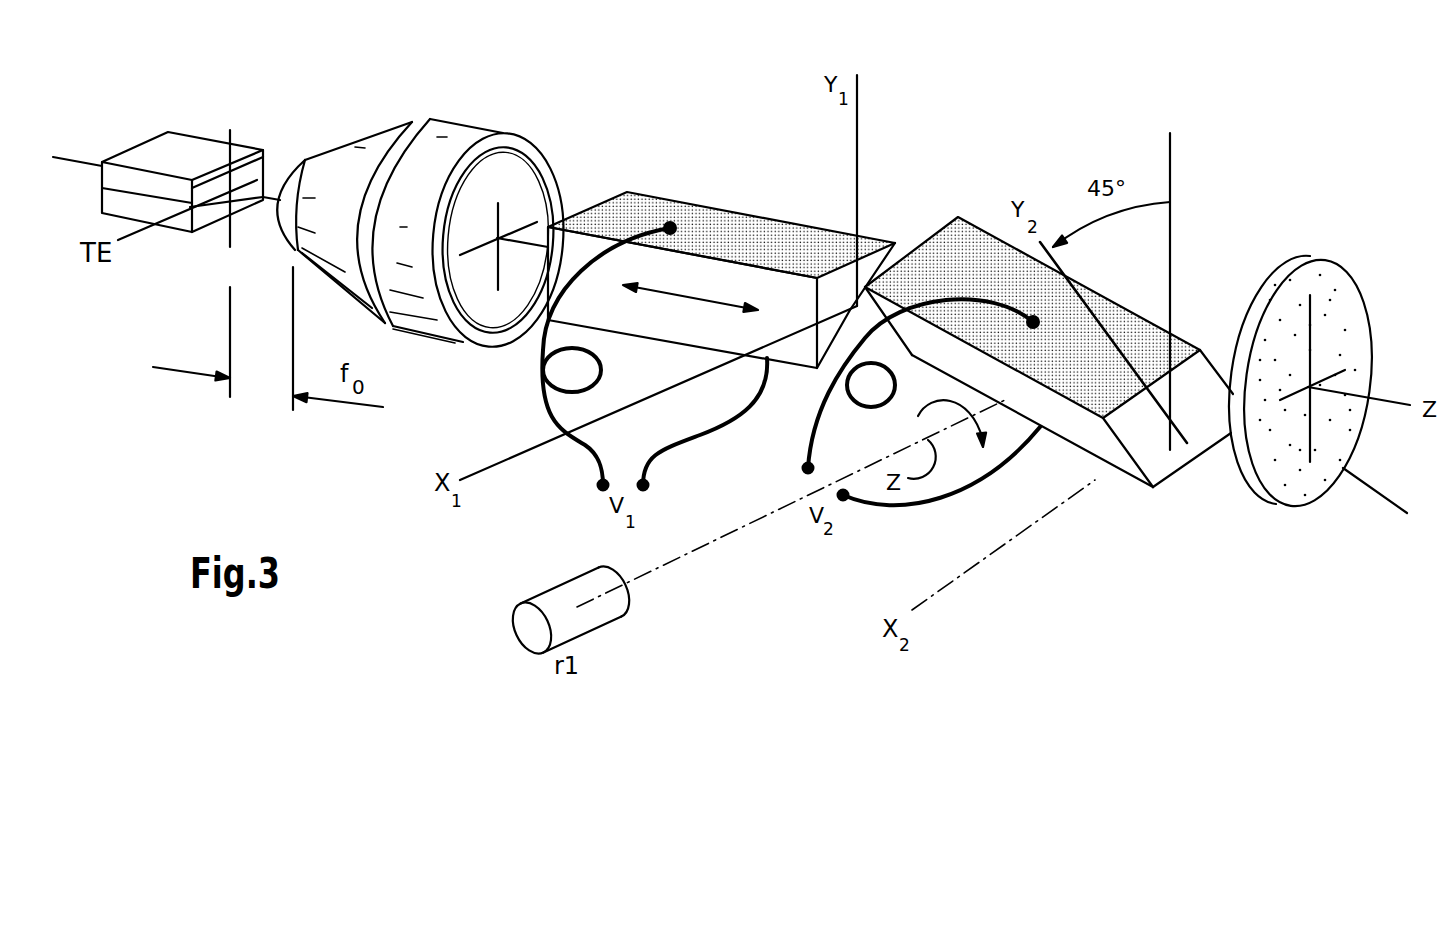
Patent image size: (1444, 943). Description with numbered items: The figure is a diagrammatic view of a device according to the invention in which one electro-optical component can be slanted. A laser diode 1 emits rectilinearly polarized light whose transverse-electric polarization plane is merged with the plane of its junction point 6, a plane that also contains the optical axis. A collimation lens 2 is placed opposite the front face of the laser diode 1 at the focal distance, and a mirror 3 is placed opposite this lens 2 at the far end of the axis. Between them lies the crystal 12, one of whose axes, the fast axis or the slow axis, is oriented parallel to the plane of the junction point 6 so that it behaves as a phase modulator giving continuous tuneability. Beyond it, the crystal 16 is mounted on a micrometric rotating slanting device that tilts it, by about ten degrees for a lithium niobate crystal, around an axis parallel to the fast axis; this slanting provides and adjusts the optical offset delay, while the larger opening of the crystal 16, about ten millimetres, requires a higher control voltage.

The laser diode 1 is at (180, 147).
The collimation lens 2 is at (343, 157).
The mirror 3 is at (1333, 322).
The junction point 6 is at (213, 207).
The crystal 12 is at (578, 243).
The crystal 16 is at (942, 277).